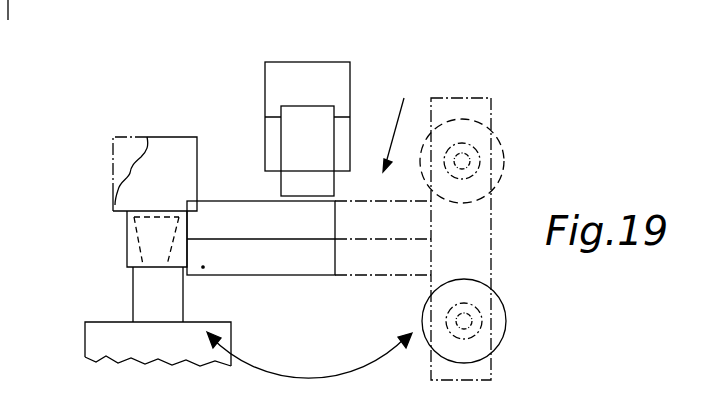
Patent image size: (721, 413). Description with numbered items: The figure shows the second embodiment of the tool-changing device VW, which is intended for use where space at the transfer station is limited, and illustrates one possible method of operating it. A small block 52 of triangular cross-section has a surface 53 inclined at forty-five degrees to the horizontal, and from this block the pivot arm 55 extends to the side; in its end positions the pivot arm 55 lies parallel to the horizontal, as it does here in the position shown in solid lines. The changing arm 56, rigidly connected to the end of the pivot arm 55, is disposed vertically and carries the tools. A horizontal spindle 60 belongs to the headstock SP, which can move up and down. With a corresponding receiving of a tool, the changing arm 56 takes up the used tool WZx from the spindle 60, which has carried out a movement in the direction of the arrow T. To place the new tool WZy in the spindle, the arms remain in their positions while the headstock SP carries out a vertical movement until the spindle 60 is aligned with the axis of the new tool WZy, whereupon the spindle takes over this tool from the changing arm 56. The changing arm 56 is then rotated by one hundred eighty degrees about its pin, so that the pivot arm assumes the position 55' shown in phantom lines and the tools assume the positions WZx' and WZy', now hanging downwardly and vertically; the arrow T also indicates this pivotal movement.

The small block 52 is at (293, 72).
The surface of the small block 53 is at (342, 146).
The pivot arm 55 is at (261, 258).
The pivoted position of the pivot arm 55' is at (383, 258).
The changing arm 56 is at (132, 256).
The spindle 60 is at (143, 292).
The headstock SP is at (158, 344).
The new tool WZy is at (89, 150).
The used tool WZx is at (175, 150).
The position of the new tool after pivoting WZy' is at (500, 154).
The position of the used tool after pivoting WZx' is at (506, 321).
The tool-changing device VW is at (402, 116).
The movement arrow T is at (307, 378).